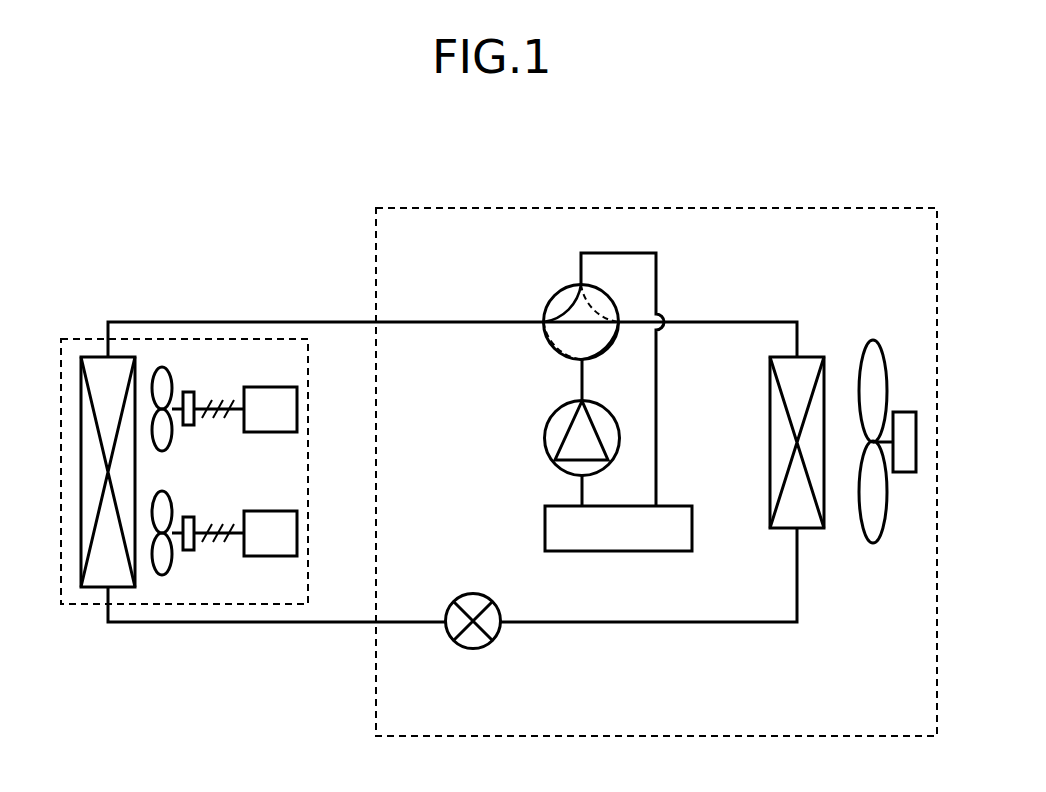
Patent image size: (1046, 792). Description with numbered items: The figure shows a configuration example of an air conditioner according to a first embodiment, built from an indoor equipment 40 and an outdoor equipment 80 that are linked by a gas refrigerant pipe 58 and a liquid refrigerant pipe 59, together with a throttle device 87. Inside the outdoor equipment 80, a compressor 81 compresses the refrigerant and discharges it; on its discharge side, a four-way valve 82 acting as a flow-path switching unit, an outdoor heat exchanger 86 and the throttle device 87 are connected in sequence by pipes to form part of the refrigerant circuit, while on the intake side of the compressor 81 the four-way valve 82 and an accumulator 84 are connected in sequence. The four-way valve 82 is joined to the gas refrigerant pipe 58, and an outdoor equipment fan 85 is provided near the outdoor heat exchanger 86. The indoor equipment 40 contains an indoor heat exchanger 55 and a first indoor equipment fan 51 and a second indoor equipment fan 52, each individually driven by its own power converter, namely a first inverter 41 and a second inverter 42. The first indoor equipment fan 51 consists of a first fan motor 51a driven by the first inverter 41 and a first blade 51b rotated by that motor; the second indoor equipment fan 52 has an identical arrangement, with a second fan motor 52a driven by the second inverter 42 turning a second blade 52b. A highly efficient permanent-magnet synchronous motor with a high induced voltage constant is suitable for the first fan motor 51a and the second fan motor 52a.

The indoor equipment 40 is at (85, 604).
The first inverter 41 is at (262, 387).
The second inverter 42 is at (262, 511).
The first indoor equipment fan 51 is at (193, 362).
The first fan motor 51a is at (175, 358).
The first blade 51b is at (161, 367).
The second indoor equipment fan 52 is at (193, 572).
The second fan motor 52a is at (188, 517).
The second blade 52b is at (161, 576).
The indoor heat exchanger 55 is at (93, 357).
The gas refrigerant pipe 58 is at (333, 322).
The liquid refrigerant pipe 59 is at (333, 622).
The outdoor equipment 80 is at (682, 208).
The compressor 81 is at (549, 415).
The four-way valve 82 is at (560, 287).
The accumulator 84 is at (545, 530).
The outdoor equipment fan 85 is at (872, 336).
The outdoor heat exchanger 86 is at (811, 357).
The throttle device 87 is at (473, 649).